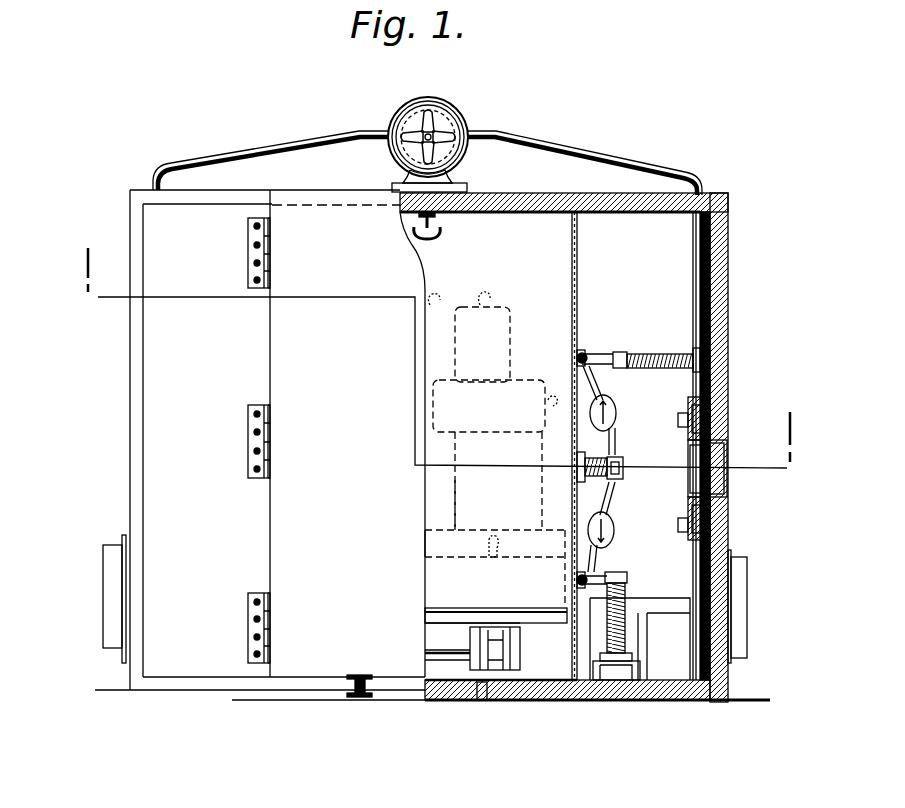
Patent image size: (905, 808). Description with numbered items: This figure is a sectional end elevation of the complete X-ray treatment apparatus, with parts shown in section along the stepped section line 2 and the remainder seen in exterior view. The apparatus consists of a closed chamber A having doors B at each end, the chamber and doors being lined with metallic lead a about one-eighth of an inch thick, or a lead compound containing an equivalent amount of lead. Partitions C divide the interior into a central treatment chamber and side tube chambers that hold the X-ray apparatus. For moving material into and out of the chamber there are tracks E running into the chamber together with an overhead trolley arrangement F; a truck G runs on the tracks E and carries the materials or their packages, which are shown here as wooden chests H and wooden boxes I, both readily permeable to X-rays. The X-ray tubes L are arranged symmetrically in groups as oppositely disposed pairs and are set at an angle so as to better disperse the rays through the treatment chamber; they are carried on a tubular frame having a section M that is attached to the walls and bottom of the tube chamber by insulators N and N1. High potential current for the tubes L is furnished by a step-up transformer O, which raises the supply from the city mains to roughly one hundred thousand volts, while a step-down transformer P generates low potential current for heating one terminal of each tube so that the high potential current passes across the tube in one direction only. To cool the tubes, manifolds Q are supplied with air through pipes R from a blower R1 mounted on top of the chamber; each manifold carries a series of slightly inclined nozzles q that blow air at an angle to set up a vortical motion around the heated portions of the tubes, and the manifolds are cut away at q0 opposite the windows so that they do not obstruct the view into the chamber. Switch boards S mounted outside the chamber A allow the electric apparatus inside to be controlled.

The closed chamber A is at (729, 270).
The metallic lead lining a is at (700, 242).
The door B is at (340, 410).
The partition C is at (572, 276).
The track E is at (514, 376).
The overhead trolley arrangement F is at (440, 236).
The truck G is at (468, 608).
The wooden chest H is at (435, 567).
The wooden box I is at (465, 498).
The X-ray tube L is at (618, 405).
The tubular frame section M is at (576, 363).
The insulator N is at (655, 352).
The insulator N1 is at (620, 462).
The step-up transformer O is at (578, 592).
The step-down transformer P is at (728, 448).
The manifold Q is at (712, 408).
The nozzle q is at (678, 420).
The cut-away portion of manifold q0 is at (700, 490).
The pipe R is at (274, 146).
The blower R1 is at (445, 98).
The switch board S is at (103, 605).
The section line 2 is at (429, 367).